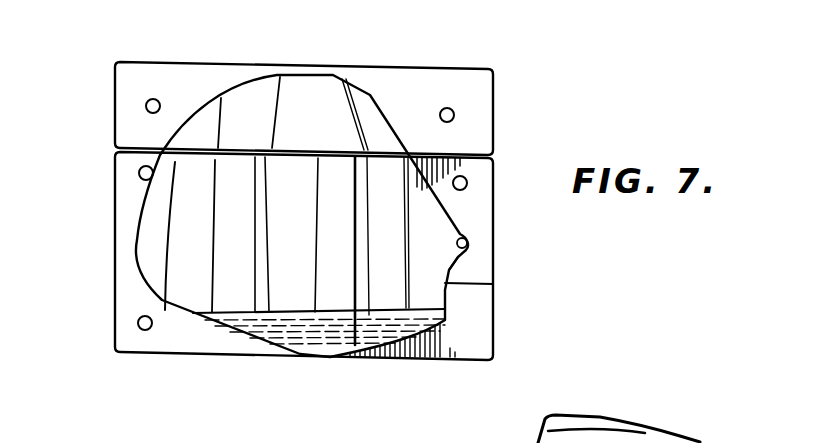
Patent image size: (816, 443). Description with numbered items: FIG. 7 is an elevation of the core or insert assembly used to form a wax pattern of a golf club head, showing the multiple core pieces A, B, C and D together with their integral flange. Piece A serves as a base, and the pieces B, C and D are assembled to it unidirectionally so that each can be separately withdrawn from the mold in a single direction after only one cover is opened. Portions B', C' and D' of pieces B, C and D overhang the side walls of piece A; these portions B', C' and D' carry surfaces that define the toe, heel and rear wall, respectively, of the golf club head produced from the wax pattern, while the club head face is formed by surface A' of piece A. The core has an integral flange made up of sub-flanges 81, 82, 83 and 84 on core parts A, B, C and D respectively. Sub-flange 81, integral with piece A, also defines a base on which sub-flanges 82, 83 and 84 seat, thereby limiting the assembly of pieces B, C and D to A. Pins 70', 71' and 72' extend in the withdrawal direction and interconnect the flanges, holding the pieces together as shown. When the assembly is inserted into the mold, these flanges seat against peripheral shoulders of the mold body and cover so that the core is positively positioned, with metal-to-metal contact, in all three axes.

The sub-flange 84 is at (420, 95).
The sub-flange 82 is at (115, 196).
The sub-flange 83 is at (480, 205).
The sub-flange 81 is at (178, 338).
The pin 72' is at (312, 90).
The pin 70' is at (97, 237).
The pin 71' is at (520, 209).
The overhanging portion of core piece D D' is at (293, 89).
The core piece D is at (303, 135).
The overhanging portion of core piece B B' is at (110, 236).
The core piece B is at (198, 236).
The core piece A is at (312, 251).
The core piece C is at (420, 233).
The surface A' is at (319, 362).
The overhanging portion of core piece C C' is at (506, 281).